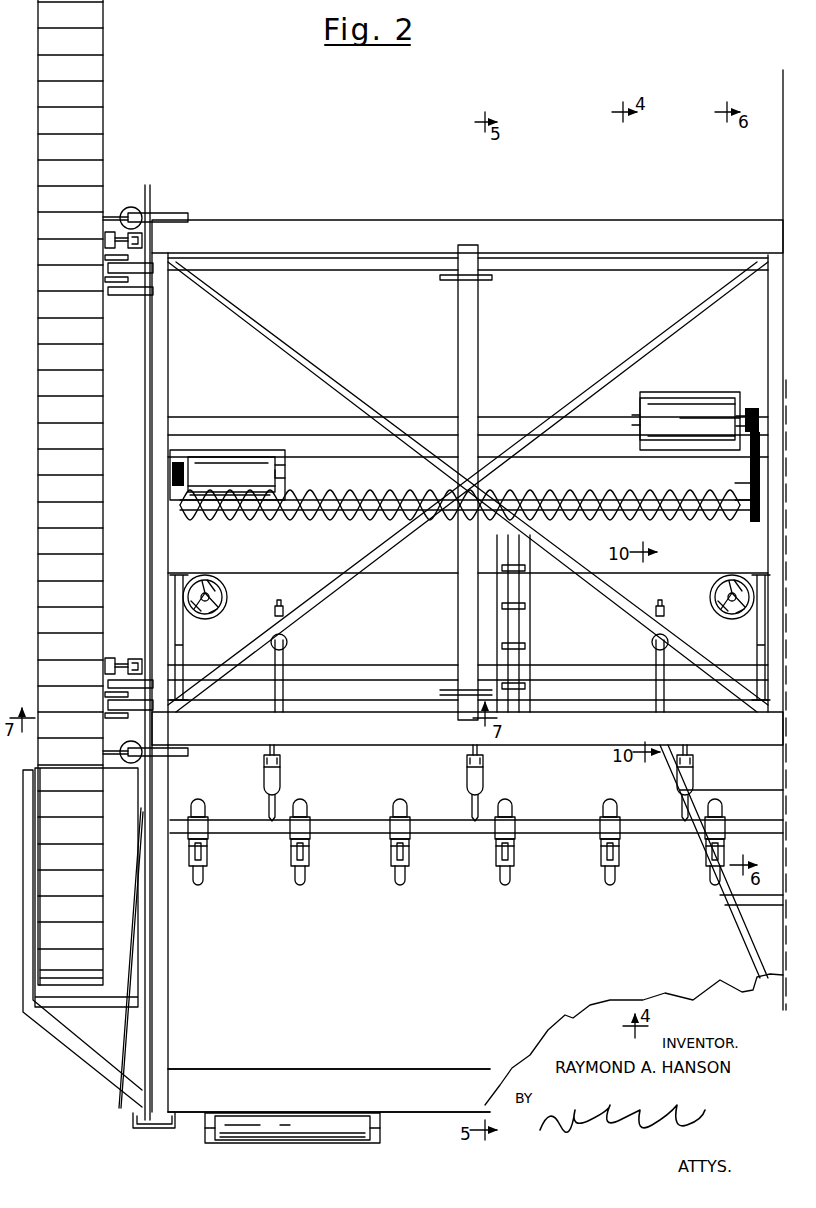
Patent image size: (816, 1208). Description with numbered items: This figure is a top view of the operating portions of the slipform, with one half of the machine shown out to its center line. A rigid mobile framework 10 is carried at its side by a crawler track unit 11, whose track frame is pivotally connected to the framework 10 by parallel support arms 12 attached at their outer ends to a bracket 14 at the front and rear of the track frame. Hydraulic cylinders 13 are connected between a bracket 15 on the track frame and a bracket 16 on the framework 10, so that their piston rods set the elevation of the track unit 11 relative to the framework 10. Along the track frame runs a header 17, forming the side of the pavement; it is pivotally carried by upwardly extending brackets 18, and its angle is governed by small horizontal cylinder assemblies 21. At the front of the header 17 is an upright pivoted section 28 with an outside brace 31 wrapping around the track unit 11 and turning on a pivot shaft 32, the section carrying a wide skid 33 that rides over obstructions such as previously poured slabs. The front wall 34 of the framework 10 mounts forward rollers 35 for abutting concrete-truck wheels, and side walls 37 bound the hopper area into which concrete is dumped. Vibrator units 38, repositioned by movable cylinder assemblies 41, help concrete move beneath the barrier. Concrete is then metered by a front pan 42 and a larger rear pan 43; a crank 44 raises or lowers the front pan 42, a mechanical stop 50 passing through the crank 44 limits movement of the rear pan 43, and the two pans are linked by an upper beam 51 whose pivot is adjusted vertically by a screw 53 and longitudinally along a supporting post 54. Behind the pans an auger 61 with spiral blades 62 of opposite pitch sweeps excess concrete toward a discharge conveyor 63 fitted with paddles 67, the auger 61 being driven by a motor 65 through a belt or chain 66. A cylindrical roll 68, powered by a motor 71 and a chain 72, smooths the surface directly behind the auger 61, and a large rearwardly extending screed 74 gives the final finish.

The rigid mobile framework 10 is at (372, 184).
The crawler track unit 11 is at (114, 122).
The support arm 12 is at (308, 266).
The hydraulic cylinder 13 is at (132, 210).
The bracket 14 is at (106, 267).
The bracket 15 is at (106, 217).
The bracket 16 is at (175, 212).
The header 17 is at (150, 549).
The bracket 18 is at (125, 296).
The horizontal cylinder assembly 21 is at (108, 239).
The pivoted section 28 is at (140, 808).
The outside brace 31 is at (52, 1022).
The pivot shaft 32 is at (116, 787).
The skid 33 is at (120, 1110).
The front wall 34 is at (360, 1078).
The forward roller 35 is at (272, 1120).
The side wall 37 is at (163, 944).
The vibrator unit 38 is at (203, 809).
The movable cylinder assembly 41 is at (264, 782).
The front pan 42 is at (606, 707).
The rear pan 43 is at (402, 645).
The crank 44 is at (183, 631).
The mechanical stop 50 is at (183, 650).
The upper beam 51 is at (275, 612).
The screw 53 is at (288, 642).
The supporting post 54 is at (285, 661).
The auger 61 is at (278, 518).
The blade 62 is at (338, 520).
The discharge conveyor 63 is at (530, 632).
The motor 65 is at (712, 410).
The belt or chain 66 is at (750, 470).
The paddle 67 is at (527, 607).
The cylindrical roll 68 is at (350, 470).
The motor 71 is at (244, 482).
The chain 72 is at (178, 464).
The screed 74 is at (552, 344).